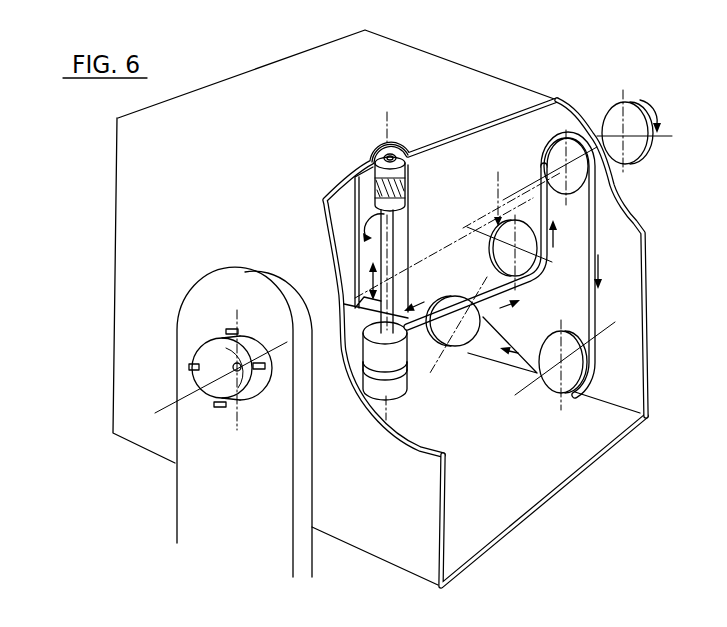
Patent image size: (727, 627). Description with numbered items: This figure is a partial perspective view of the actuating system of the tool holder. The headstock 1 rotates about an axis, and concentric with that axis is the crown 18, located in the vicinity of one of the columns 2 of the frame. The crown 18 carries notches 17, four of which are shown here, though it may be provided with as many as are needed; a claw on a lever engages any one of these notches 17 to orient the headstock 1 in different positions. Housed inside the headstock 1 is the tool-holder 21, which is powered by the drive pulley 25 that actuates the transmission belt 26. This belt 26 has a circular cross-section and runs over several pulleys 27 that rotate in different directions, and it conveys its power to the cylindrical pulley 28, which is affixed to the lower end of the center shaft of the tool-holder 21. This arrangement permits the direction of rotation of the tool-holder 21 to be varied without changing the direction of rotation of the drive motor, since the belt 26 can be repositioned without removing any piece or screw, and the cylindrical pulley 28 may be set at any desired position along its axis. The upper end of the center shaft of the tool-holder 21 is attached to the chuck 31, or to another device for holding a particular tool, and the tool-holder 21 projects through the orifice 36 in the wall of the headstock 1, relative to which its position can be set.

The headstock 1 is at (395, 62).
The column 2 is at (208, 462).
The notch 17 is at (193, 366).
The crown 18 is at (193, 379).
The tool-holder 21 is at (390, 245).
The drive pulley 25 is at (627, 117).
The transmission belt 26 is at (627, 210).
The pulley 27 is at (516, 222).
The cylindrical pulley 28 is at (395, 388).
The chuck 31 is at (398, 168).
The orifice 36 is at (385, 143).